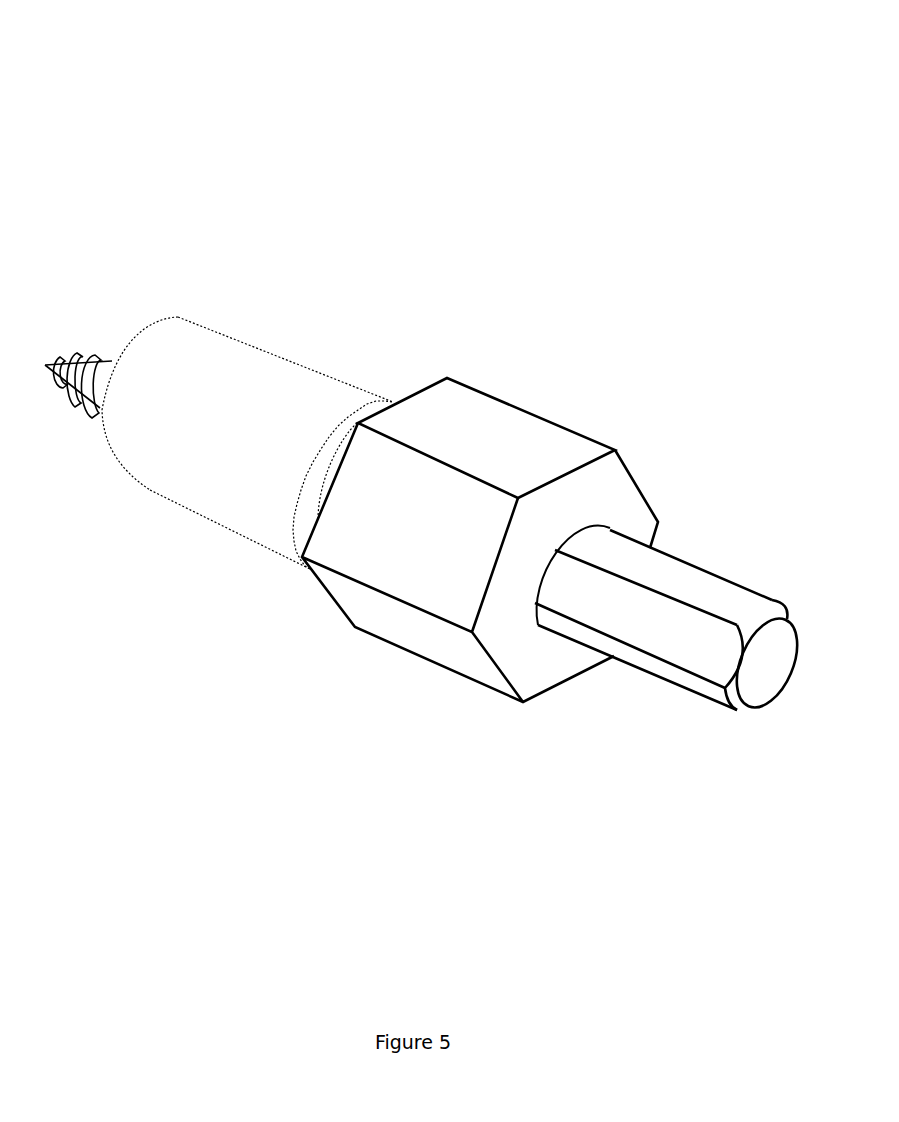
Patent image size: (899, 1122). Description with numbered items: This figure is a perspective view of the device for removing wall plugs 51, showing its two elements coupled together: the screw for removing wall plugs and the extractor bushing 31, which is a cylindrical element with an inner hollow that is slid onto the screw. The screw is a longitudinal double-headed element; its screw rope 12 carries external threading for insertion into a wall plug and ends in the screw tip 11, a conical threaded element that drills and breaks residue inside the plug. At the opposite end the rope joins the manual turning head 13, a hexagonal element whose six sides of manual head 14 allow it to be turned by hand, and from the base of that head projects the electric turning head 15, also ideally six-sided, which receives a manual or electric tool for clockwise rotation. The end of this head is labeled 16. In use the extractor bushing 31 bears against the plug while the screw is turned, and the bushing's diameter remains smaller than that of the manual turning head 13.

The device for removing wall plugs 51 is at (392, 275).
The screw tip 11 is at (49, 357).
The screw rope 12 is at (60, 397).
The extractor bushing 31 is at (268, 393).
The manual turning head 13 is at (480, 421).
The sides of manual head 14 is at (556, 440).
The electric turning head 15 is at (672, 512).
The shaft end 16 is at (743, 602).